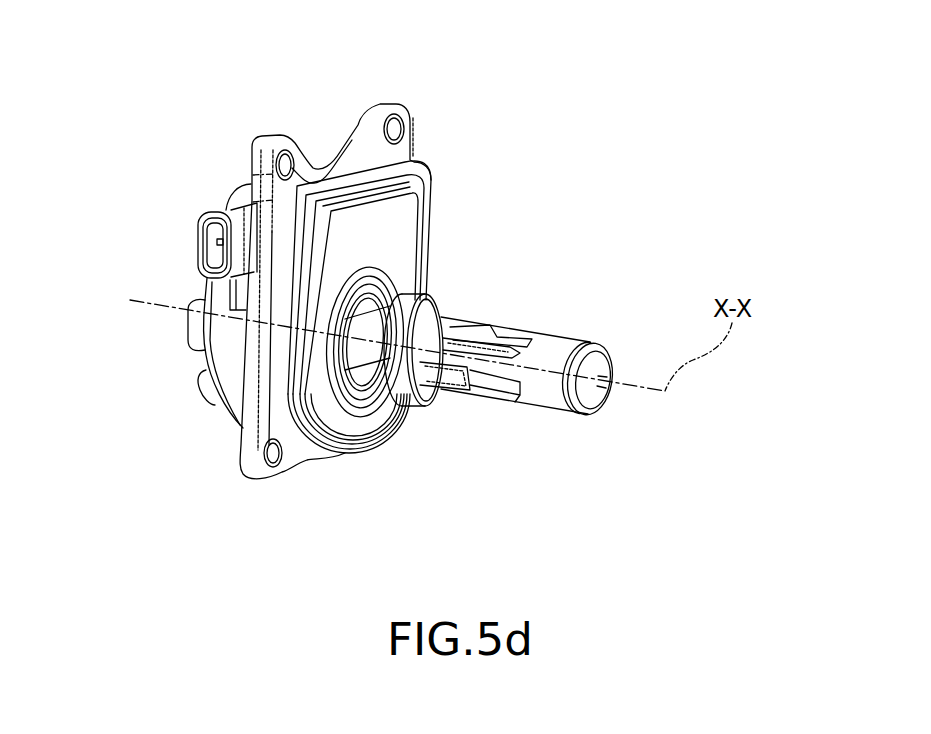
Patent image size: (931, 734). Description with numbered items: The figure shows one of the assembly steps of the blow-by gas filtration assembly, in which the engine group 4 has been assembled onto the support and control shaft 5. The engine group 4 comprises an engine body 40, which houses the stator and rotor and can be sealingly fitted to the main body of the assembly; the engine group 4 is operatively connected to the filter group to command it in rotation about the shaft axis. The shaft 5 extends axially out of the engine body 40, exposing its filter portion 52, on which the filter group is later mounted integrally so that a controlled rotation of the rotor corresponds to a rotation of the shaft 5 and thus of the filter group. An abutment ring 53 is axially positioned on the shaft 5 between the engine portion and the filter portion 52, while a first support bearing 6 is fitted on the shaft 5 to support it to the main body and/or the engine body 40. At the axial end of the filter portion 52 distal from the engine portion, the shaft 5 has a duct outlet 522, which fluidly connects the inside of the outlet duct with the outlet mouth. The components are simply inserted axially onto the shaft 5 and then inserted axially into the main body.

The engine group 4 is at (120, 115).
The engine body 40 is at (322, 112).
The first support bearing 6 is at (397, 287).
The abutment ring 53 is at (455, 300).
The support and control shaft 5 is at (620, 305).
The filter portion 52 is at (490, 413).
The duct outlet 522 is at (600, 392).